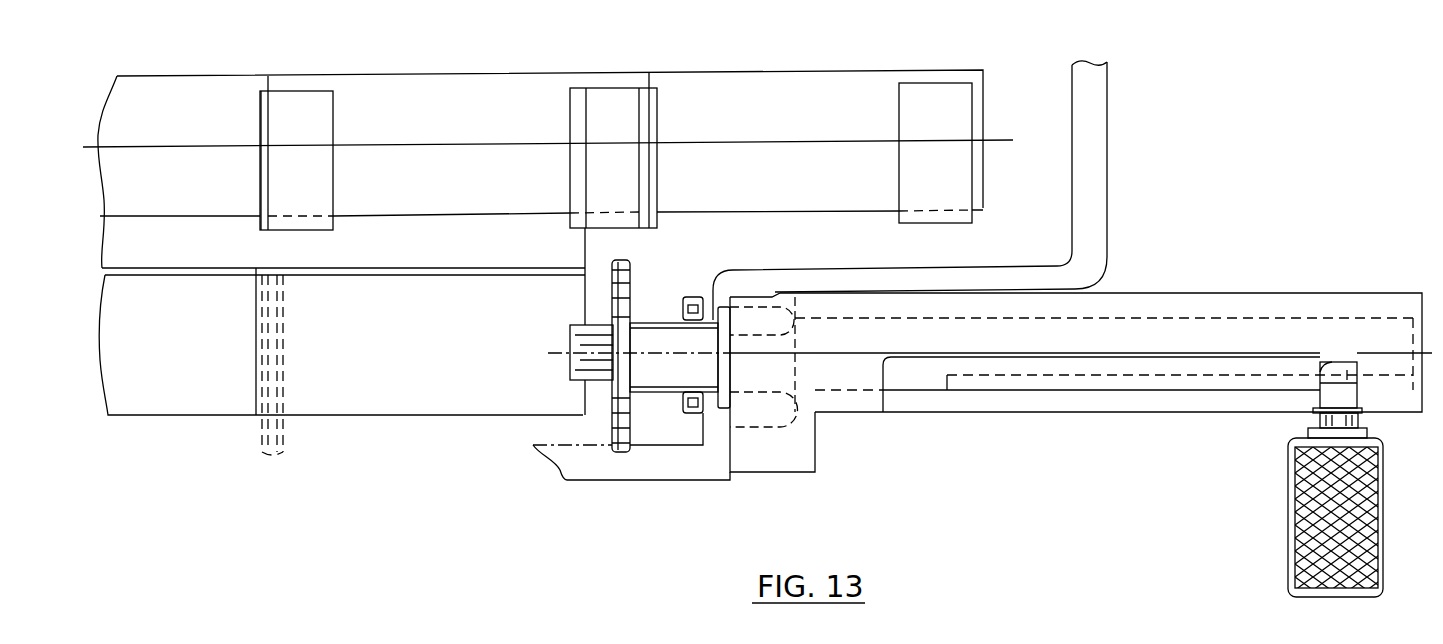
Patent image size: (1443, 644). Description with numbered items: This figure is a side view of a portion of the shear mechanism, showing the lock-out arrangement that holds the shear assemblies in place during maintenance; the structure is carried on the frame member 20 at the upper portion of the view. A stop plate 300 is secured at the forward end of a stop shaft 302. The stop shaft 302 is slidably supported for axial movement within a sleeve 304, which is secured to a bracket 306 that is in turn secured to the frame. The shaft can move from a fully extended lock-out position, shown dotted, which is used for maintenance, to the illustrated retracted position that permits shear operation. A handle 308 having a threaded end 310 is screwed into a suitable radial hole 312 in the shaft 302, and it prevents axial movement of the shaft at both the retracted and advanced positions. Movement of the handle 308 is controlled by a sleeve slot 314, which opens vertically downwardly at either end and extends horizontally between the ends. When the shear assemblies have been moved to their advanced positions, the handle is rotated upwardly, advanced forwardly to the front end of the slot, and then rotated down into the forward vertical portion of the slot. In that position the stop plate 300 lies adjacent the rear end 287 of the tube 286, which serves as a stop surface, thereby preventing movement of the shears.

The support beam 20 is at (749, 97).
The tube 286 is at (210, 415).
The rear end (stop surface means) 287 is at (256, 378).
The stop plate 300 is at (283, 332).
The stop shaft 302 is at (690, 367).
The sleeve 304 is at (1163, 307).
The bracket 306 is at (813, 277).
The handle 308 is at (1290, 528).
The threaded end 310 is at (1318, 395).
The radial hole 312 is at (1347, 360).
The sleeve slot 314 is at (1068, 370).